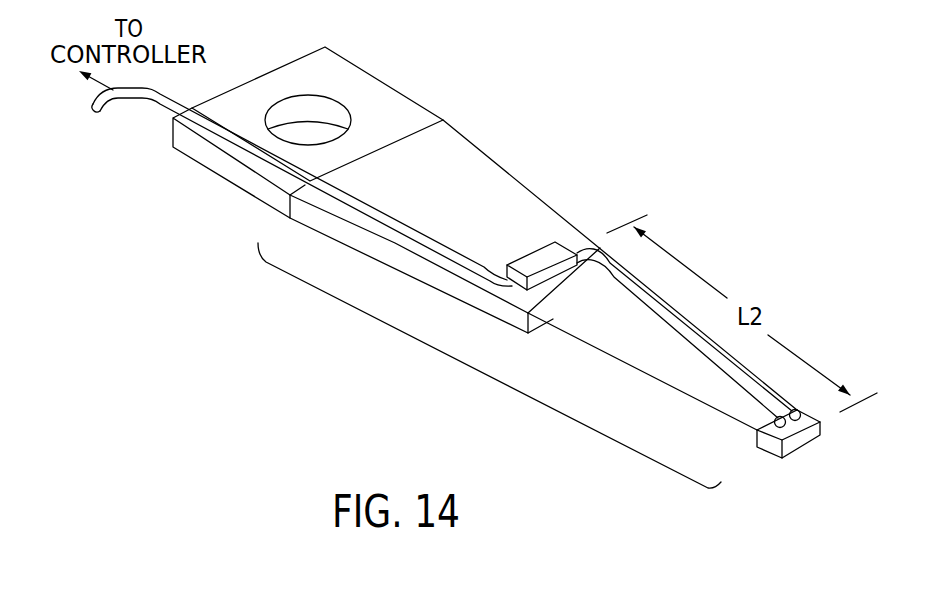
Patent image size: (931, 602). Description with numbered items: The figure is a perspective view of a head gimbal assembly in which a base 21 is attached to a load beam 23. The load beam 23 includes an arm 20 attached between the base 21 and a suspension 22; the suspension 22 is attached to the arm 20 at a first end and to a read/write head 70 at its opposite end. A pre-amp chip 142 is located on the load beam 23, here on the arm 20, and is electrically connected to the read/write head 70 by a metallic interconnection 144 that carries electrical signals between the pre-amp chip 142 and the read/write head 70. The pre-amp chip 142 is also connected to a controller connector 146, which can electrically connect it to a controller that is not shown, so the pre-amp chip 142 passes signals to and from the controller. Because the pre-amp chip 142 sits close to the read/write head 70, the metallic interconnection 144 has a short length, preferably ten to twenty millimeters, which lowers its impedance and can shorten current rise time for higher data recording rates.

The arm 20 is at (500, 192).
The base 21 is at (382, 95).
The suspension 22 is at (602, 332).
The load beam 23 is at (478, 374).
The read/write head 70 is at (790, 448).
The pre-amp chip 142 is at (545, 255).
The metallic interconnection 144 is at (713, 357).
The controller connector 146 is at (387, 220).